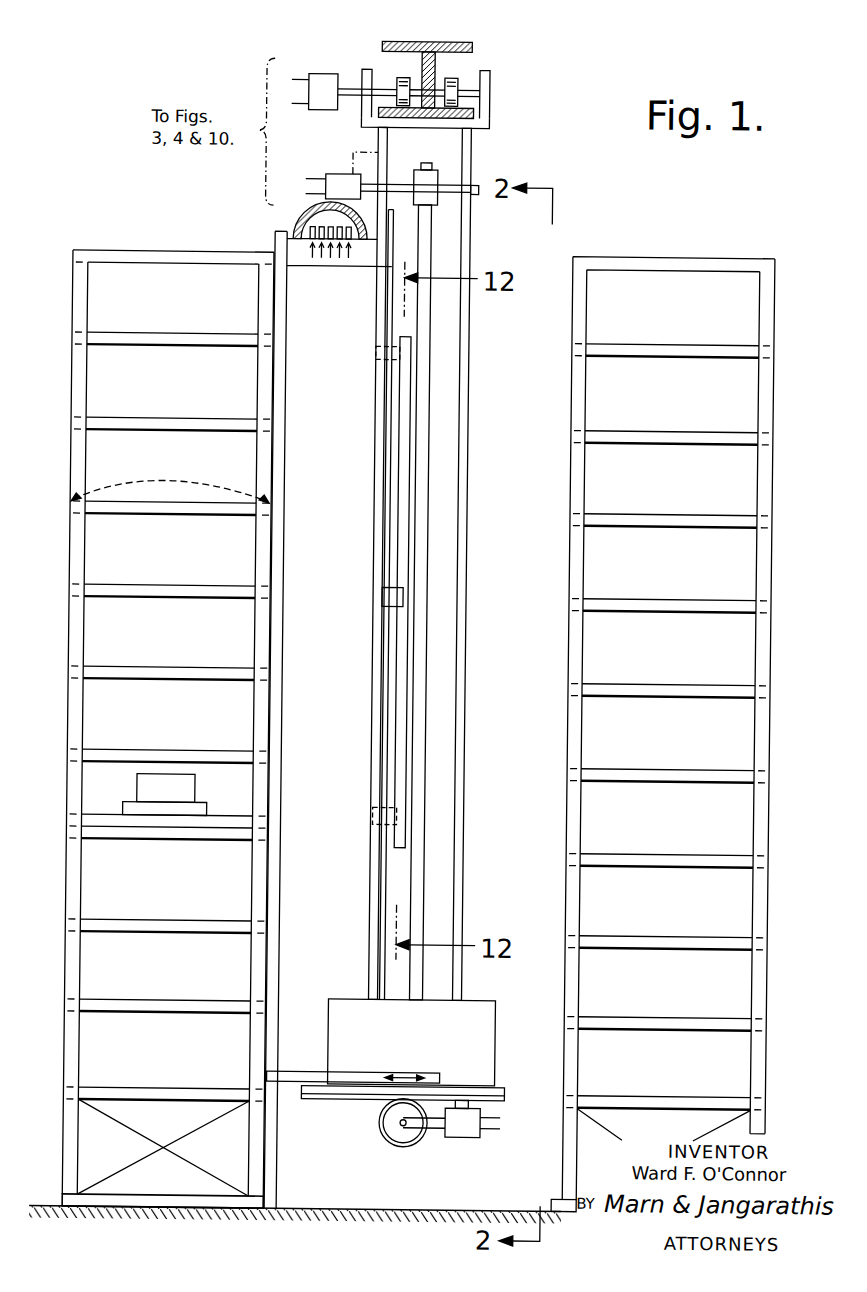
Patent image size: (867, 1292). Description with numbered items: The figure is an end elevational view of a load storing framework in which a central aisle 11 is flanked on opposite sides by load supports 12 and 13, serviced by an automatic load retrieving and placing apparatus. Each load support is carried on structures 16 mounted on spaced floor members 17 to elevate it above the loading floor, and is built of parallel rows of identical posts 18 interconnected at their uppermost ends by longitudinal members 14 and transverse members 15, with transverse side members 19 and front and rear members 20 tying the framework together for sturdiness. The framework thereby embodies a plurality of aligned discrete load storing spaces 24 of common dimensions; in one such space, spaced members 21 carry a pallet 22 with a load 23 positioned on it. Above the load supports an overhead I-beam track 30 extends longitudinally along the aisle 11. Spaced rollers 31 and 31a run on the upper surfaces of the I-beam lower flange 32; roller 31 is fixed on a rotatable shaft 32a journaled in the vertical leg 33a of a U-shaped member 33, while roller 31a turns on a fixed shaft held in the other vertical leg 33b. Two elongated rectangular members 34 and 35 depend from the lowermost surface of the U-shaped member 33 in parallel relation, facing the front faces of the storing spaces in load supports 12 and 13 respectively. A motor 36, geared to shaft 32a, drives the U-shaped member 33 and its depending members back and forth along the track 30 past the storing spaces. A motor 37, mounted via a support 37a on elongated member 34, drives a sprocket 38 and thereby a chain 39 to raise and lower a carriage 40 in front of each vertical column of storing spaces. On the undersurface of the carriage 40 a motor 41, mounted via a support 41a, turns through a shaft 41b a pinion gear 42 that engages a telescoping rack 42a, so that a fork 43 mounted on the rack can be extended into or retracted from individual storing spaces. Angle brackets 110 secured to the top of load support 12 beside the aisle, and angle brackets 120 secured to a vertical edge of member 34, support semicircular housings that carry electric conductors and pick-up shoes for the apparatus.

The central aisle 11 is at (332, 491).
The load support 12 is at (59, 462).
The load support 13 is at (787, 473).
The longitudinal member 14 is at (78, 254).
The transverse member 15 is at (151, 267).
The structure 16 is at (136, 1131).
The floor member 17 is at (190, 1197).
The post 18 is at (259, 552).
The transverse side member 19 is at (192, 670).
The front and rear member 20 is at (170, 482).
The spaced member 21 is at (108, 818).
The pallet 22 is at (213, 815).
The load 23 is at (203, 793).
The load storing space 24 is at (184, 393).
The overhead I-beam track 30 is at (443, 44).
The roller 31 is at (397, 80).
The roller 31a is at (457, 80).
The I-beam lower flange 32 is at (463, 92).
The rotatable shaft 32a is at (349, 90).
The U-shaped member 33 is at (405, 128).
The vertical leg 33a is at (362, 103).
The vertical leg 33b is at (489, 80).
The elongated rectangular member 34 is at (378, 742).
The elongated rectangular member 35 is at (470, 742).
The motor 36 is at (318, 75).
The motor 37 is at (325, 180).
The support 37a is at (349, 166).
The sprocket 38 is at (439, 178).
The chain 39 is at (432, 236).
The carriage 40 is at (337, 1016).
The motor 41 is at (481, 1138).
The support 41a is at (479, 1105).
The shaft 41b is at (444, 1130).
The pinion gear 42 is at (391, 1139).
The rack 42a is at (353, 1106).
The fork 43 is at (303, 1073).
The angle bracket 110 is at (271, 239).
The angle bracket 120 is at (389, 610).